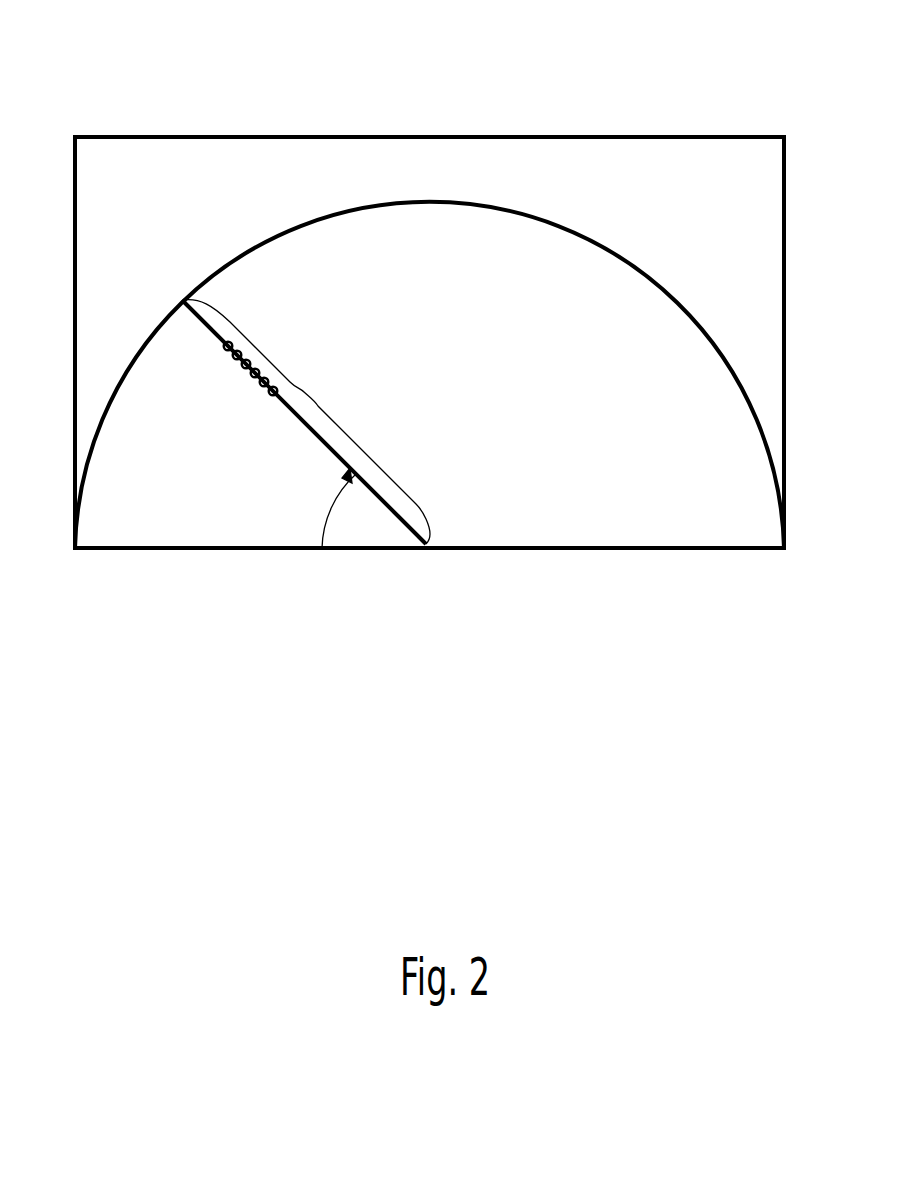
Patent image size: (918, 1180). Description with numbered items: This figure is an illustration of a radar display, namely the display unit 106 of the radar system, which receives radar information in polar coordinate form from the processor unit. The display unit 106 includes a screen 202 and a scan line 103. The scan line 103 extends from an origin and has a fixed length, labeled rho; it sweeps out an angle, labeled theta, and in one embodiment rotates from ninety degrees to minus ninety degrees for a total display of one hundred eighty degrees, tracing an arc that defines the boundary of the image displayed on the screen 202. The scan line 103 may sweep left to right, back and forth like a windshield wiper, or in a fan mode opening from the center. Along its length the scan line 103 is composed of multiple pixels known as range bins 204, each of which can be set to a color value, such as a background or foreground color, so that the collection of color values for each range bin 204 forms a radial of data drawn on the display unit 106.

The display unit 106 is at (98, 88).
The screen 202 is at (733, 173).
The scan line 103 is at (198, 318).
The range bins 204 is at (247, 372).